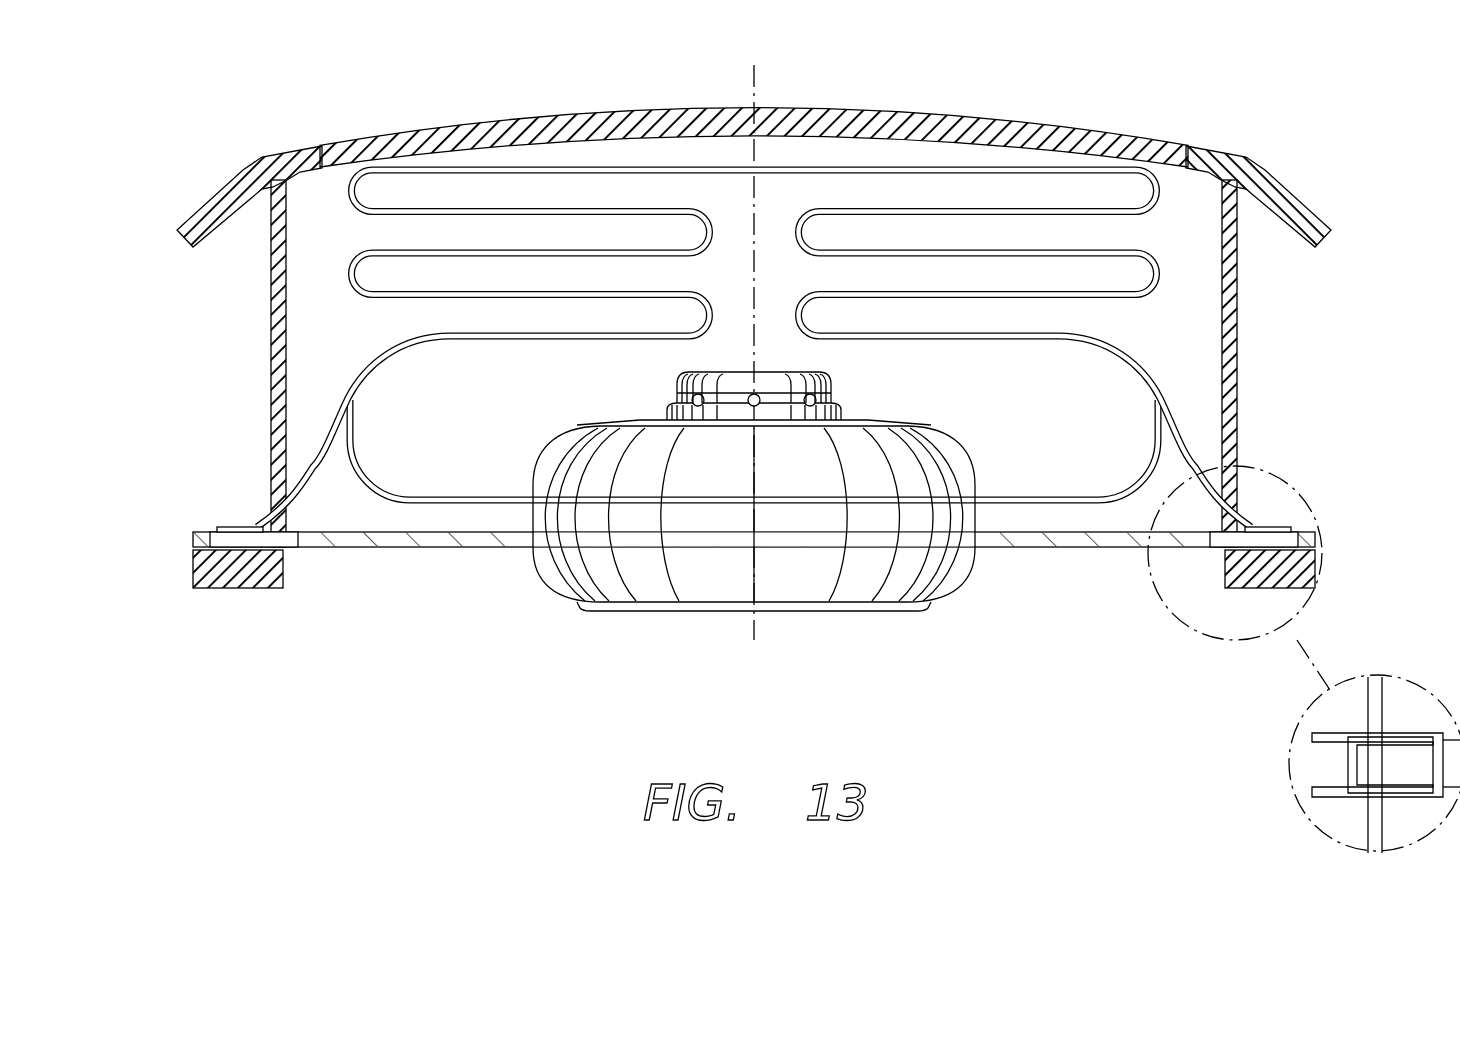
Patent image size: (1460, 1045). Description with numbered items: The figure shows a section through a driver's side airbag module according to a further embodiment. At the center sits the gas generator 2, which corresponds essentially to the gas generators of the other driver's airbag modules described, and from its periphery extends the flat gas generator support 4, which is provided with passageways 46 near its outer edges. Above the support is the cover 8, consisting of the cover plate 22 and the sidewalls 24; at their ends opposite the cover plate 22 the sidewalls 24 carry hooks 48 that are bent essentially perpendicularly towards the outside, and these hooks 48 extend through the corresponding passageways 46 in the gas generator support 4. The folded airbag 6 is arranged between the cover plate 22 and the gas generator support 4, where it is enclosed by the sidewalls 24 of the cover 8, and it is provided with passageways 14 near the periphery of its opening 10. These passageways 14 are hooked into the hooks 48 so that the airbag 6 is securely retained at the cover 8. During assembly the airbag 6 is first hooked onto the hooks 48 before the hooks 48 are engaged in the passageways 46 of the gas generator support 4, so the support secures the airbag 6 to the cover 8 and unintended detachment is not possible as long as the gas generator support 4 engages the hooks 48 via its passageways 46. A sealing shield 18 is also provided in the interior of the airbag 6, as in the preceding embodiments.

The gas generator 2 is at (820, 557).
The gas generator support 4 is at (1093, 550).
The folded airbag 6 is at (860, 167).
The cover 8 is at (243, 172).
The opening 10 is at (364, 507).
The passageways 14 is at (297, 535).
The sealing shield 18 is at (470, 507).
The cover plate 22 is at (677, 107).
The sidewalls 24 is at (270, 388).
The passageways 46 is at (243, 533).
The hooks 48 is at (193, 587).